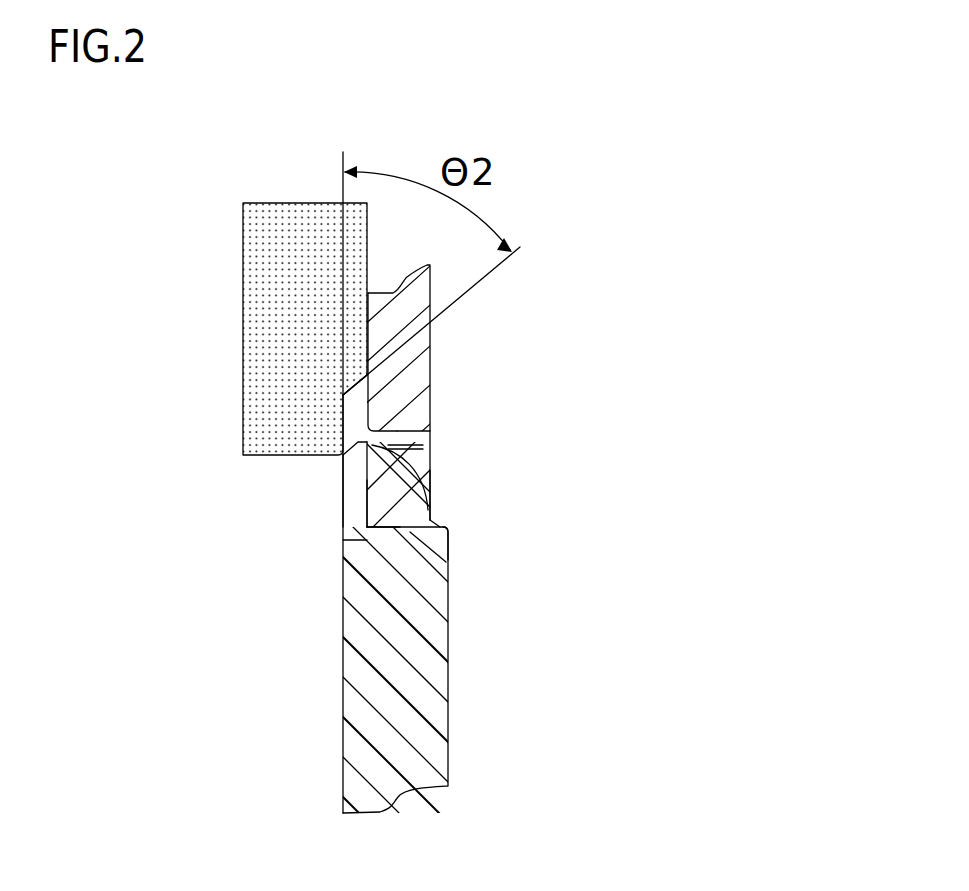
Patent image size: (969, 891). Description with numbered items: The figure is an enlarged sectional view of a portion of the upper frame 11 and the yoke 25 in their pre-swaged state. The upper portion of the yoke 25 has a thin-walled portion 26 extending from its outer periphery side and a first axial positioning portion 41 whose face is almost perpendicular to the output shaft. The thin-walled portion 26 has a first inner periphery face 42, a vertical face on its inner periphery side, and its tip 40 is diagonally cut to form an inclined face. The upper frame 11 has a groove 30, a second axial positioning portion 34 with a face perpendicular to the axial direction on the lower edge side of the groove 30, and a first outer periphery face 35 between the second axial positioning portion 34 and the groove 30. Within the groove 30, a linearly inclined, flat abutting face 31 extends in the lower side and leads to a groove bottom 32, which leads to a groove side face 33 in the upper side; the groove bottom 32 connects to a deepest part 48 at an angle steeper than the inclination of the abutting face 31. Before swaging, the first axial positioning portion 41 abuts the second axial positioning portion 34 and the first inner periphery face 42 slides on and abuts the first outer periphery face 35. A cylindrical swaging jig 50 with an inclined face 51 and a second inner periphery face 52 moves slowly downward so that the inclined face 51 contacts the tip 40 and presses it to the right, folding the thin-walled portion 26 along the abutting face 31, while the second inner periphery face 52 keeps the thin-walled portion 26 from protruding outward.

The upper frame 11 is at (432, 345).
The yoke 25 is at (448, 738).
The thin-walled portion 26 is at (343, 473).
The groove 30 is at (418, 458).
The abutting face 31 is at (400, 500).
The groove bottom 32 is at (412, 472).
The groove side face 33 is at (405, 443).
The second axial positioning portion 34 is at (446, 562).
The first outer periphery face 35 is at (360, 515).
The tip 40 is at (412, 415).
The first axial positioning portion 41 is at (362, 550).
The first inner periphery face 42 is at (360, 487).
The deepest part 48 is at (425, 455).
The swaging jig 50 is at (243, 210).
The inclined face 51 is at (343, 393).
The second inner periphery face 52 is at (340, 431).